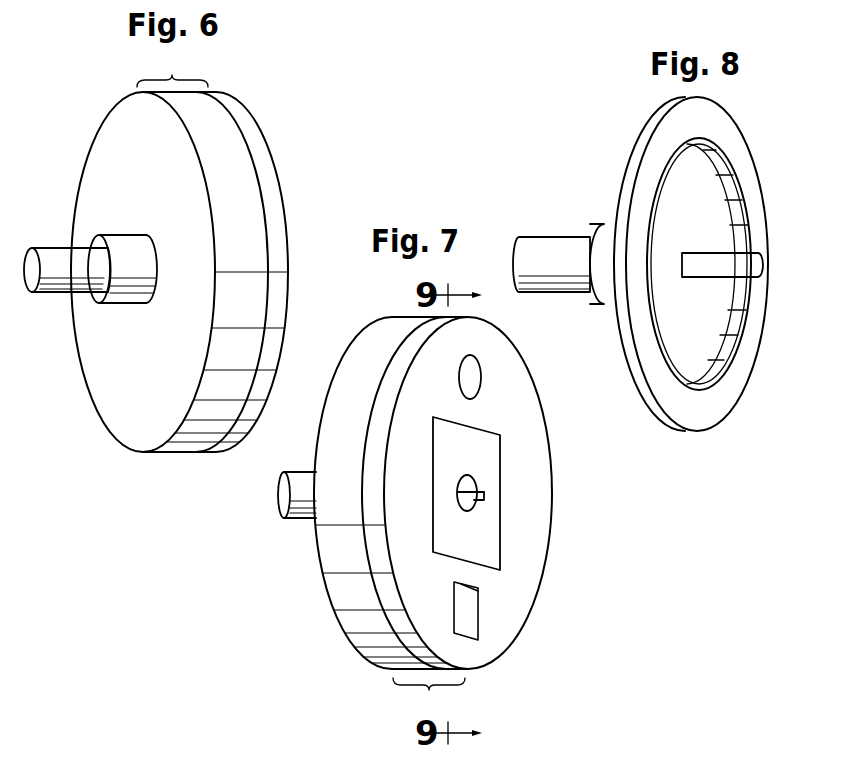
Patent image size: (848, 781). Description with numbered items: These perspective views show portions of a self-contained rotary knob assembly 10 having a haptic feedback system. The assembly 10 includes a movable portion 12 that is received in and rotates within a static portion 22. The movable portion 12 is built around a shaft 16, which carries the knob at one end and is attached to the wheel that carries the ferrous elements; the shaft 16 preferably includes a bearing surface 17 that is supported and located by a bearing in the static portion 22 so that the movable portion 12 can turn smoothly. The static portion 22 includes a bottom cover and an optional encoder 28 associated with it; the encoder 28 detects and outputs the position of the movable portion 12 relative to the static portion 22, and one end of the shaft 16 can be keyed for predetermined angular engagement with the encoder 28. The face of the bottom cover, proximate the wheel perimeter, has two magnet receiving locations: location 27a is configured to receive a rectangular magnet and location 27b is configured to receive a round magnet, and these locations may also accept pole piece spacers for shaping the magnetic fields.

In FIG. 6, the self-contained rotary knob assembly 10 is at (252, 95).
In FIG. 7, the self-contained rotary knob assembly 10 is at (372, 312).
In FIG. 8, the movable portion 12 is at (640, 124).
In FIG. 6, the shaft 16 is at (26, 262).
In FIG. 7, the shaft 16 is at (297, 488).
In FIG. 8, the shaft 16 is at (552, 246).
In FIG. 6, the bearing surface 17 is at (67, 272).
In FIG. 6, the static portion 22 is at (172, 70).
In FIG. 7, the static portion 22 is at (429, 696).
In FIG. 7, the magnet receiving location 27a is at (466, 620).
In FIG. 7, the magnet receiving location 27b is at (472, 378).
In FIG. 7, the encoder 28 is at (490, 543).